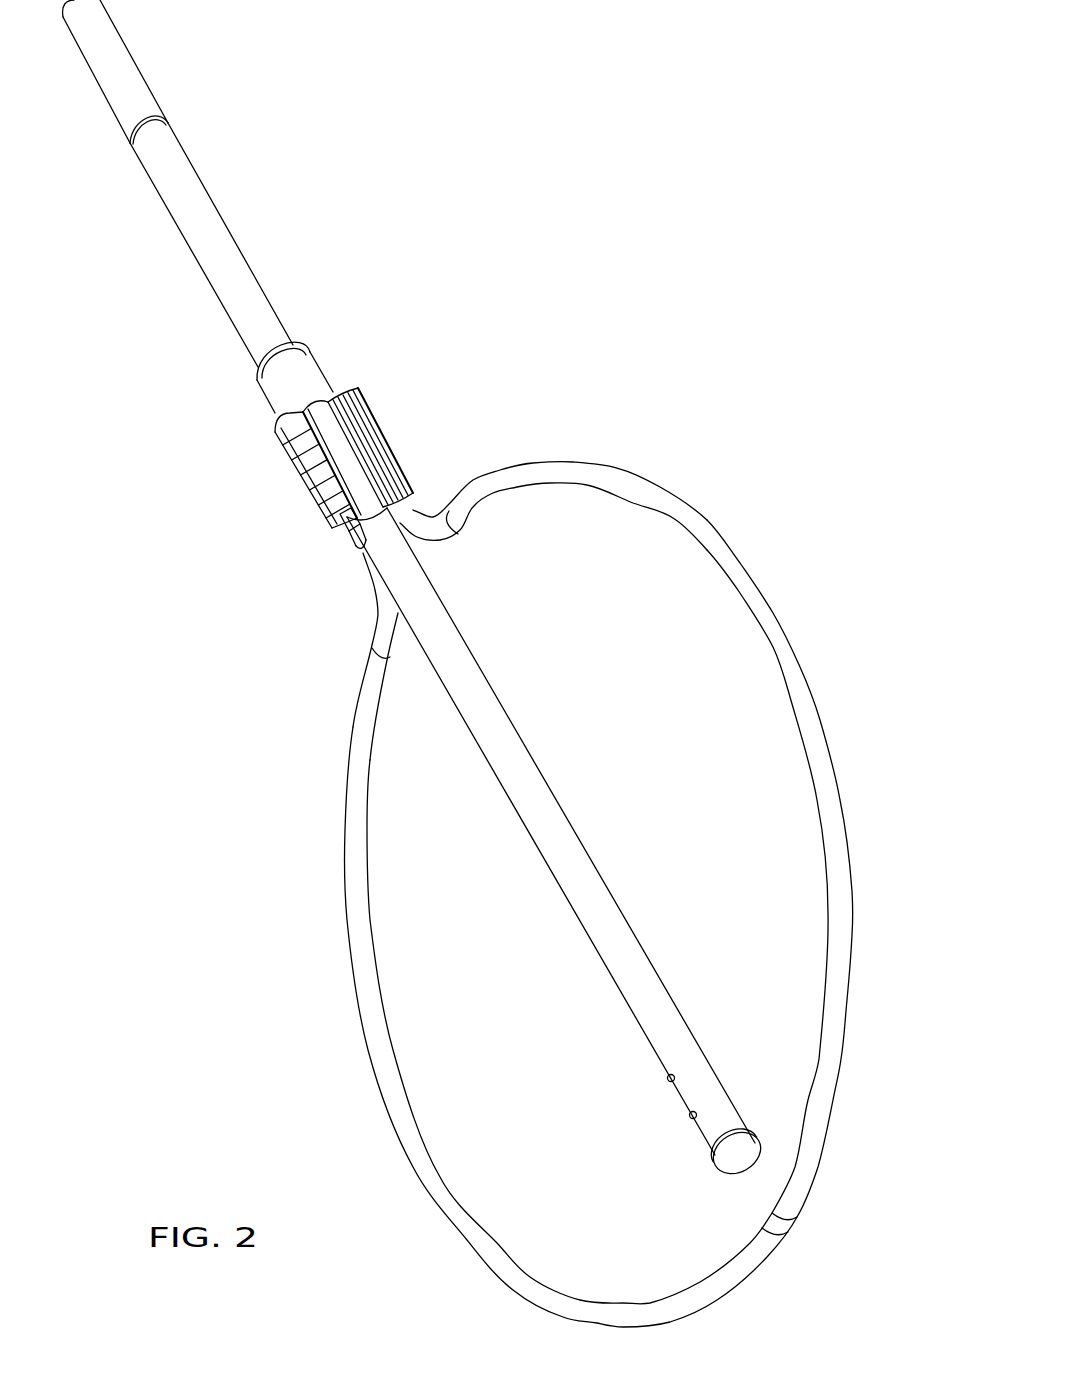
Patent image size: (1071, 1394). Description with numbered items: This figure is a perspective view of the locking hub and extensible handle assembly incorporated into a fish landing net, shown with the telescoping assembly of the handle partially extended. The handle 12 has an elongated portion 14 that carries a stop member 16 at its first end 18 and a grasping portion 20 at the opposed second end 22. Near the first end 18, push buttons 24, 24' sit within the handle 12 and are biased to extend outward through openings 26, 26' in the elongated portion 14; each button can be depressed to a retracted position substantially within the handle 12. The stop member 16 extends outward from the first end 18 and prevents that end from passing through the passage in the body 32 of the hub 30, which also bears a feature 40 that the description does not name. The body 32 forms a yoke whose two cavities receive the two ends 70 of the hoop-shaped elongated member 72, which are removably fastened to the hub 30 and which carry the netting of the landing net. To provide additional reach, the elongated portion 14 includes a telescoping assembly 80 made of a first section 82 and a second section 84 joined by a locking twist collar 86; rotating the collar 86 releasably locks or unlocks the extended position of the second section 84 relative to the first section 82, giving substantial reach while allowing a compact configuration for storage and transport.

The handle 12 is at (488, 644).
The elongated portion 14 is at (460, 707).
The stop member 16 is at (740, 1155).
The first end 18 is at (710, 1140).
The grasping portion 20 is at (112, 38).
The second end 22 is at (155, 130).
The push button 24 is at (522, 1173).
The opening 24' is at (552, 1210).
The opening 26 is at (777, 1088).
The protrusion 26' is at (788, 1133).
The hub 30 is at (376, 398).
The body 32 is at (347, 463).
The ribbed grip portion 40 is at (286, 487).
The ends of hoop-shaped elongated member 70 is at (413, 512).
The hoop-shaped elongated member 72 is at (334, 857).
The telescoping assembly 80 is at (326, 354).
The first section 82 is at (440, 645).
The second section 84 is at (203, 230).
The locking twist collar 86 is at (288, 383).